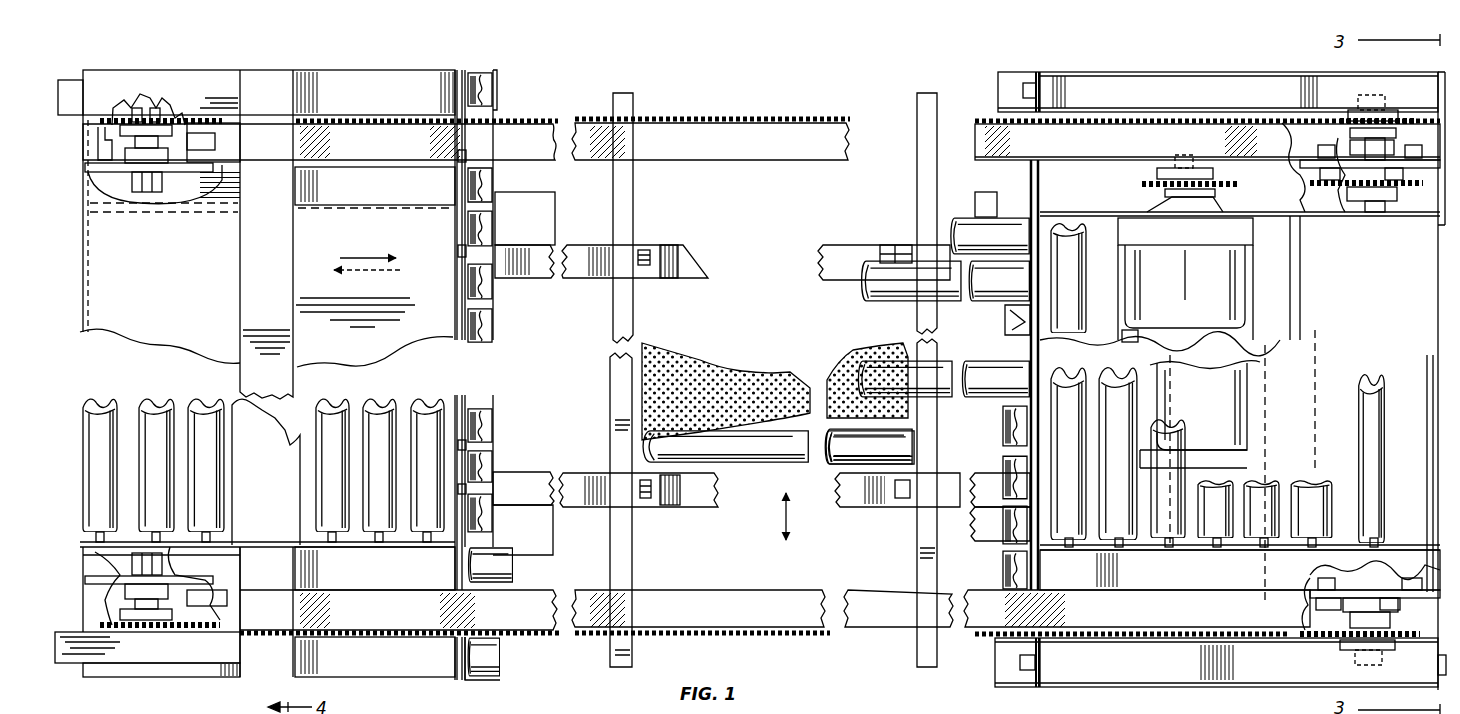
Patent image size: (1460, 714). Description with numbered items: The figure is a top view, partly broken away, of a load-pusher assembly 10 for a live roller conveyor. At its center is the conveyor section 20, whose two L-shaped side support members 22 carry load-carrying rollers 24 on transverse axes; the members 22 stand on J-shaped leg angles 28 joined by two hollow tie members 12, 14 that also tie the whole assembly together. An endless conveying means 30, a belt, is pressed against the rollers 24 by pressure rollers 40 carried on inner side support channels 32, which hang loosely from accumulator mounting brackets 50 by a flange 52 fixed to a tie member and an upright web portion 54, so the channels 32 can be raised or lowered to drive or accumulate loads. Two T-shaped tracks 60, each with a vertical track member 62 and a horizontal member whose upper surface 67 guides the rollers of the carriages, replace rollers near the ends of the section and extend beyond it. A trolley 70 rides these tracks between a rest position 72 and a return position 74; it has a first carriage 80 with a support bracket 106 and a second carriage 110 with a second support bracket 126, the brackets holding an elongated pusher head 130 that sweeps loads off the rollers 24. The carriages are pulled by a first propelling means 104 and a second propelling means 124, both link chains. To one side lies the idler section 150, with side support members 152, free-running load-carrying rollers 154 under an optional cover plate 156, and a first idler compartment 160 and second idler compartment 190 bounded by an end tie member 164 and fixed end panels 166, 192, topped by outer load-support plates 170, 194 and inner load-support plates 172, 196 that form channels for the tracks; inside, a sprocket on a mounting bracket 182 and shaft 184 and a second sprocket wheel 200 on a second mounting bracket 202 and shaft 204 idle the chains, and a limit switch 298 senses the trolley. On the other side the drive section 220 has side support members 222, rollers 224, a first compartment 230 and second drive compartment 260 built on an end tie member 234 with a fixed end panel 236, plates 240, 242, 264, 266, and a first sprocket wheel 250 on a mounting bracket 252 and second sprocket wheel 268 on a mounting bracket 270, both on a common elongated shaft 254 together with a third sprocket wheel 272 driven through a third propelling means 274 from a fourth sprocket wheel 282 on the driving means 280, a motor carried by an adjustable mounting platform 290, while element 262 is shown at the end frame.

The load-pusher assembly 10 is at (148, 62).
The tie member 12 is at (685, 247).
The tie member 14 is at (527, 482).
The conveyor section 20 is at (797, 352).
The side support member 22 is at (495, 84).
The load-carrying roller 24 is at (483, 85).
The leg angle 28 is at (544, 233).
The endless conveying means 30 is at (693, 377).
The inner side support channel 32 is at (632, 103).
The pressure roller 40 is at (738, 448).
The accumulator mounting bracket 50 is at (642, 284).
The flange 52 is at (670, 277).
The web portion 54 is at (640, 248).
The track 60 is at (732, 114).
The vertical track member 62 is at (212, 140).
The upper surface 67 is at (800, 132).
The trolley 70 is at (220, 265).
The rest position 72 is at (168, 67).
The return position 74 is at (1328, 70).
The first carriage 80 is at (200, 672).
The first propelling means 104 is at (137, 630).
The support bracket 106 is at (65, 655).
The second carriage 110 is at (222, 74).
The second propelling means 124 is at (345, 118).
The second support bracket 126 is at (70, 92).
The pusher head 130 is at (286, 233).
The idler section 150 is at (210, 391).
The side support member 152 is at (368, 208).
The load-carrying roller 154 is at (105, 405).
The cover plate 156 is at (98, 287).
The first idler compartment 160 is at (200, 568).
The end tie member 164 is at (95, 405).
The fixed end panel 166 is at (88, 600).
The outer load-support plate 170 is at (367, 665).
The inner load-support plate 172 is at (372, 563).
The mounting bracket 182 is at (85, 580).
The shaft 184 is at (145, 620).
The second idler compartment 190 is at (172, 186).
The fixed end panel 192 is at (84, 180).
The outer load-support plate 194 is at (386, 78).
The inner load-support plate 196 is at (435, 177).
The second sprocket wheel 200 is at (162, 113).
The second mounting bracket 202 is at (118, 166).
The shaft 204 is at (143, 140).
The drive section 220 is at (1302, 441).
The side support member 222 is at (1053, 218).
The load-carrying roller 224 is at (1227, 478).
The first compartment 230 is at (1352, 573).
The end tie member 234 is at (1427, 438).
The fixed end panel 236 is at (1433, 667).
The outer load-support plate 240 is at (1258, 673).
The inner load-support plate 242 is at (1190, 575).
The first sprocket wheel 250 is at (1340, 643).
The mounting bracket 252 is at (1313, 592).
The elongated shaft 254 is at (1378, 402).
The second drive compartment 260 is at (1333, 199).
The end frame 262 is at (1438, 97).
The outer load-support plate 264 is at (1220, 85).
The inner load-support plate 266 is at (1093, 187).
The second sprocket wheel 268 is at (1350, 112).
The mounting bracket 270 is at (1296, 167).
The third sprocket wheel 272 is at (1386, 203).
The third propelling means 274 is at (1228, 167).
The driving means 280 is at (1217, 407).
The fourth sprocket wheel 282 is at (1162, 168).
The mounting platform 290 is at (1340, 307).
The limit switch 298 is at (164, 706).